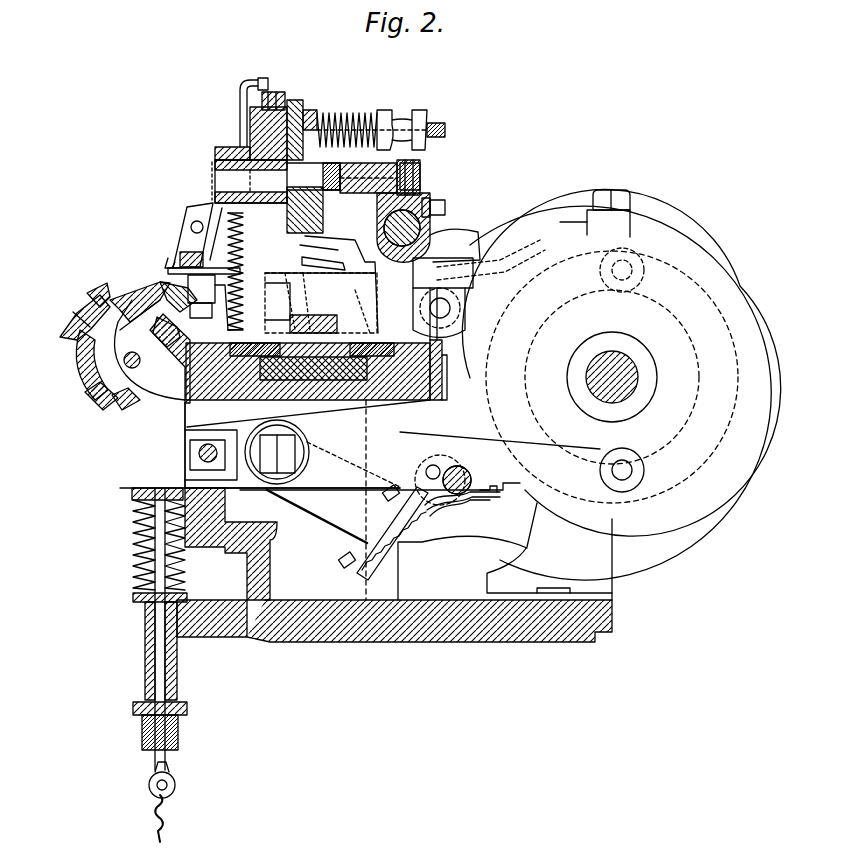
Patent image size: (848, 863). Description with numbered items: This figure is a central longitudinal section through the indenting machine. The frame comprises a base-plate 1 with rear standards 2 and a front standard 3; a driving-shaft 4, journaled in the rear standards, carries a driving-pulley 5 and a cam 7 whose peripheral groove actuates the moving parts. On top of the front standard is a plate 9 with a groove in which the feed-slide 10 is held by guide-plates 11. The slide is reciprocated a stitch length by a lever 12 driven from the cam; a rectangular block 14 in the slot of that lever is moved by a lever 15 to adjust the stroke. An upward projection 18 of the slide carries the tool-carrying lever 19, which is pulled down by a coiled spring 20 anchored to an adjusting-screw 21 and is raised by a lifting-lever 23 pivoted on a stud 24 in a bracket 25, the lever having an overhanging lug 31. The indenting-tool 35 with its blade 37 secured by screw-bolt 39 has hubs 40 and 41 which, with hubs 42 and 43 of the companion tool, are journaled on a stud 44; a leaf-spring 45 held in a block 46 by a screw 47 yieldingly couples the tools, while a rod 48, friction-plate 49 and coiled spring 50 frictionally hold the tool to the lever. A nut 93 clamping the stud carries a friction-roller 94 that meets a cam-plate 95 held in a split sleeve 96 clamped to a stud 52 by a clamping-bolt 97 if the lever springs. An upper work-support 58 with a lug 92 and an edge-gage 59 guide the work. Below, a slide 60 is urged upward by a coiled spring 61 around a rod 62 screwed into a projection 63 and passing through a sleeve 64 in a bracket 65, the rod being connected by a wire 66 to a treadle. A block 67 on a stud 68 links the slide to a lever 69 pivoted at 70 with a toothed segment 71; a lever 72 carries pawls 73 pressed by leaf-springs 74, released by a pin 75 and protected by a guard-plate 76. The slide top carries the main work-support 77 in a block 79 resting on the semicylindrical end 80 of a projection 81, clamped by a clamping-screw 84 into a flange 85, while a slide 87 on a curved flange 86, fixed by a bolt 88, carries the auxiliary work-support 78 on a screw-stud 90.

The base-plate 1 is at (460, 640).
The rear standards 2 is at (614, 578).
The front standard 3 is at (317, 500).
The driving-shaft 4 is at (622, 365).
The driving-pulley 5 is at (712, 228).
The cam 7 is at (712, 276).
The plate 9 is at (442, 370).
The feed-slide 10 is at (307, 442).
The guide-plates 11 is at (308, 361).
The lever 12 is at (553, 230).
The rectangular block 14 is at (358, 262).
The lever 15 is at (321, 303).
The projection 18 is at (315, 258).
The tool-carrying lever 19 is at (300, 215).
The coiled spring 20 is at (201, 300).
The adjusting-screw 21 is at (239, 271).
The lifting-lever 23 is at (514, 314).
The stud 24 is at (452, 296).
The bracket 25 is at (440, 357).
The overhanging lug 31 is at (476, 268).
The indenting-tool 35 is at (207, 205).
The indenting blade 37 is at (185, 245).
The screw-bolt 39 is at (192, 224).
The hub 40 is at (235, 150).
The hub 41 is at (250, 130).
The hub 42 is at (215, 152).
The hub 43 is at (297, 107).
The stud 44 is at (212, 163).
The leaf-spring 45 is at (240, 115).
The block 46 is at (240, 100).
The screw 47 is at (278, 92).
The rod 48 is at (440, 123).
The friction-plate 49 is at (312, 112).
The coiled spring 50 is at (372, 112).
The stud 52 is at (440, 240).
The upper work-support 58 is at (172, 268).
The edge-gage 59 is at (165, 270).
The slide 60 is at (184, 414).
The coiled spring 61 is at (133, 545).
The rod 62 is at (167, 668).
The horizontal projection 63 is at (130, 488).
The sleeve 64 is at (172, 690).
The bracket 65 is at (228, 633).
The wire 66 is at (165, 825).
The rectangular block 67 is at (188, 444).
The stud 68 is at (198, 456).
The lever 69 is at (252, 425).
The pivot 70 is at (288, 440).
The toothed segment 71 is at (425, 526).
The lever 72 is at (442, 462).
The pawls 73 is at (462, 494).
The leaf-springs 74 is at (452, 516).
The pin 75 is at (425, 470).
The guard-plate 76 is at (490, 505).
The main work-support 77 is at (110, 300).
The auxiliary work-support 78 is at (60, 328).
The block 79 is at (178, 297).
The semicylindrical upper end 80 is at (157, 332).
The projection 81 is at (210, 313).
The clamping-screw 84 is at (141, 361).
The flange 85 is at (152, 351).
The flange 86 is at (135, 397).
The slide 87 is at (80, 370).
The bolt 88 is at (86, 398).
The screw-stud 90 is at (88, 294).
The lug 92 is at (205, 258).
The nut 93 is at (398, 165).
The friction-roller 94 is at (420, 175).
The cam-plate 95 is at (432, 196).
The split sleeve 96 is at (440, 222).
The clamping-bolt 97 is at (448, 208).